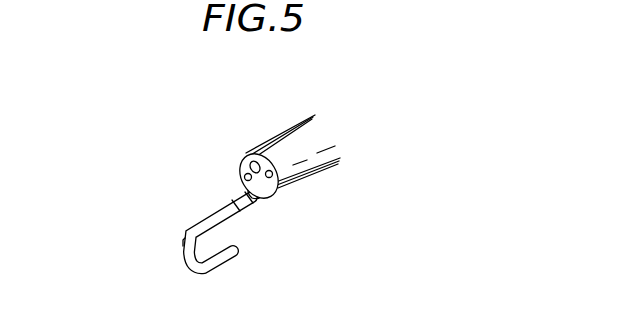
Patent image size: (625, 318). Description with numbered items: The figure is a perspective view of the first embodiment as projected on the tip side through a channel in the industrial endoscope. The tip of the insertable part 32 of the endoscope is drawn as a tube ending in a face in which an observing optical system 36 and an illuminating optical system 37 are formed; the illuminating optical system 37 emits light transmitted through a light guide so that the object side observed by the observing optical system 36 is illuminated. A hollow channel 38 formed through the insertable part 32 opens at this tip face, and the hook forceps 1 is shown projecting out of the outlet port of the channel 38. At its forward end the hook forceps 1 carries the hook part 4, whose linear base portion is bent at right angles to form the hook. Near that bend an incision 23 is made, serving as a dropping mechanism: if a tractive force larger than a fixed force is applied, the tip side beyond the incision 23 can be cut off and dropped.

The hook forceps 1 is at (188, 208).
The hook part 4 is at (190, 272).
The incision 23 is at (184, 242).
The insertable part 32 is at (292, 142).
The observing optical system 36 is at (242, 157).
The illuminating optical system 37 is at (245, 177).
The channel 38 is at (266, 199).